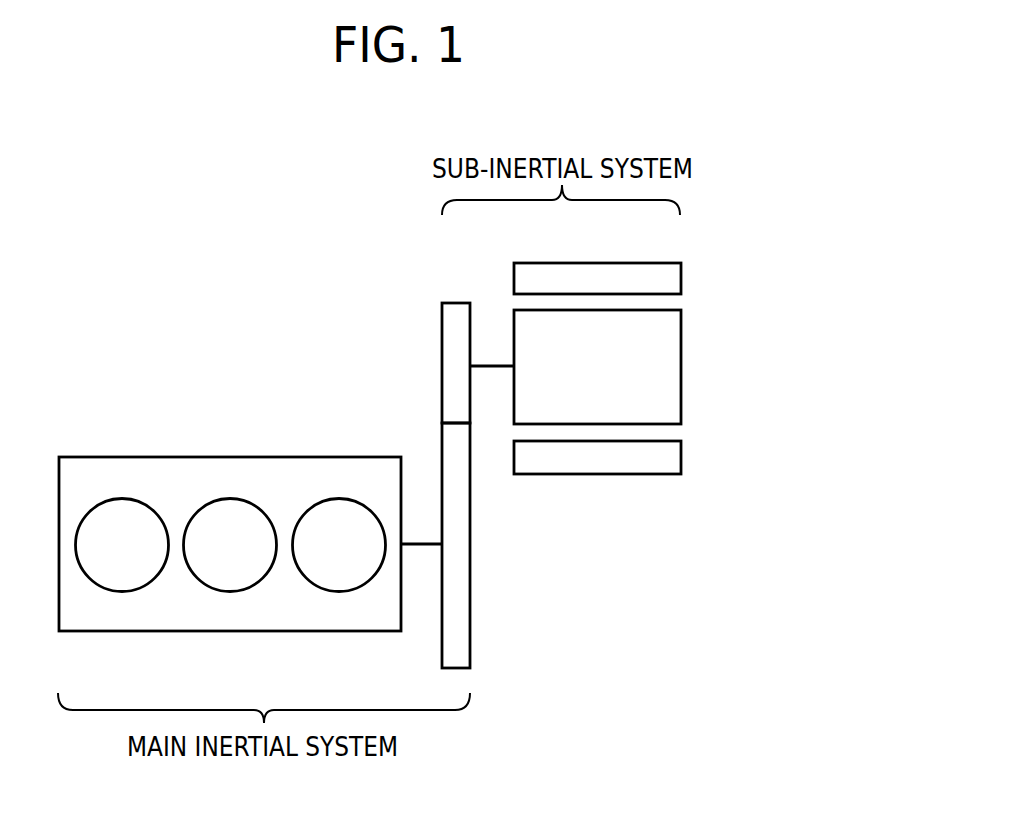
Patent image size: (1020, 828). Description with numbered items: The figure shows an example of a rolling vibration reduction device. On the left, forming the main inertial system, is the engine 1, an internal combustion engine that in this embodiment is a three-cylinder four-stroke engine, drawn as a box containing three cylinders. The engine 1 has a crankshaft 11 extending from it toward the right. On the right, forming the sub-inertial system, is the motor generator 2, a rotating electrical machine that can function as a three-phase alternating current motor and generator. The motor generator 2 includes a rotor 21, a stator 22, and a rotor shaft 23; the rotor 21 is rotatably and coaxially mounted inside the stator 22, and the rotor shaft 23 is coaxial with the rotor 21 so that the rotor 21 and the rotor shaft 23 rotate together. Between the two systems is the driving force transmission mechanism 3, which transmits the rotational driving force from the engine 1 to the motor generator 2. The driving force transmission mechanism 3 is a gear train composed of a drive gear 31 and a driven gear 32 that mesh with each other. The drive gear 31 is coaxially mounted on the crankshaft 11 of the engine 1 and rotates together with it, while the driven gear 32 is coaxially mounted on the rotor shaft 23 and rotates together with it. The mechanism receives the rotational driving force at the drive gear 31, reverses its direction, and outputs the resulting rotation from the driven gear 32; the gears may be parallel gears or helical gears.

The engine 1 is at (328, 457).
The crankshaft 11 is at (427, 544).
The motor generator 2 is at (651, 368).
The rotor 21 is at (681, 375).
The stator 22 is at (681, 453).
The rotor shaft 23 is at (498, 366).
The driving force transmission mechanism 3 is at (476, 485).
The drive gear 31 is at (470, 617).
The driven gear 32 is at (442, 318).